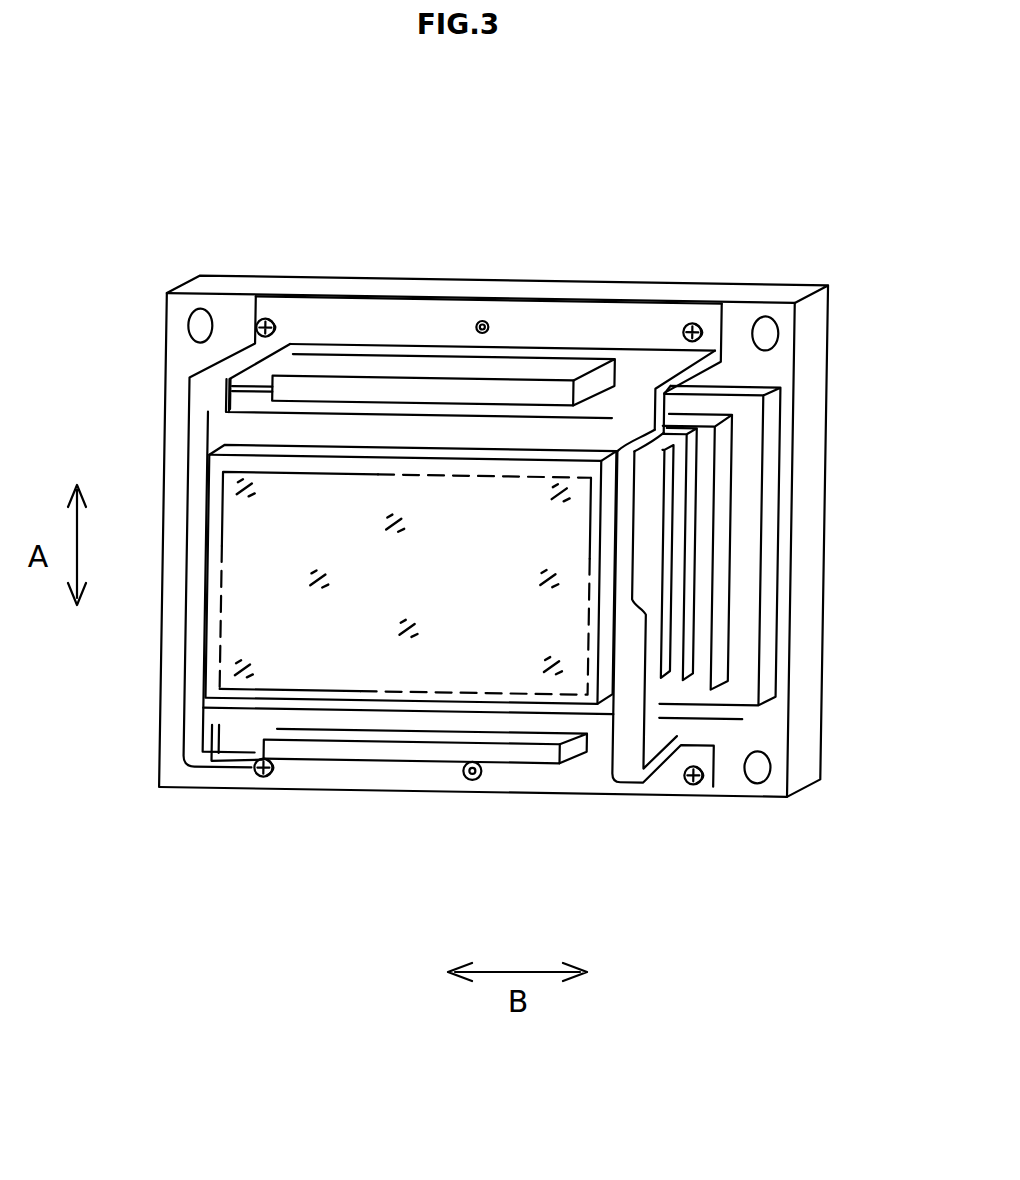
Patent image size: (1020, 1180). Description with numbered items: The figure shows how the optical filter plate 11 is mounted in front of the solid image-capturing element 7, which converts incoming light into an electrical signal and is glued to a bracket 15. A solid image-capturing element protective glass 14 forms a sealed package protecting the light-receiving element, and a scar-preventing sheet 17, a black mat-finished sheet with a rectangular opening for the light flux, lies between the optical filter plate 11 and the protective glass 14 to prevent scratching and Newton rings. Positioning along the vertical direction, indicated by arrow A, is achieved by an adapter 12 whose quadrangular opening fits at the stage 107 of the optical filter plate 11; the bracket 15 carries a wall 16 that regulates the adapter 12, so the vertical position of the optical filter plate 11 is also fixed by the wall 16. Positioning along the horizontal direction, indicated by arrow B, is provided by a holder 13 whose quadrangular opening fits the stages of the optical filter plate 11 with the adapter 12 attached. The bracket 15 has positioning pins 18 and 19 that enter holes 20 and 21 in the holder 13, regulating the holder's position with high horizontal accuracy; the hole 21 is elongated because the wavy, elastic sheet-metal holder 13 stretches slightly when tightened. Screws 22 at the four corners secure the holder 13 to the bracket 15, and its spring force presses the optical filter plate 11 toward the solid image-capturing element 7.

The solid image-capturing element 7 is at (748, 432).
The optical filter plate 11 is at (307, 682).
The adapter 12 is at (700, 338).
The holder 13 is at (372, 322).
The solid image-capturing element protective glass 14 is at (702, 500).
The bracket 15 is at (755, 302).
The wall 16 is at (330, 360).
The scar-preventing sheet 17 is at (697, 592).
The positioning pin 18 is at (481, 320).
The positioning pin 19 is at (478, 782).
The hole 20 is at (487, 322).
The hole 21 is at (470, 781).
The screw 22 is at (268, 318).
The stage 107 is at (653, 556).